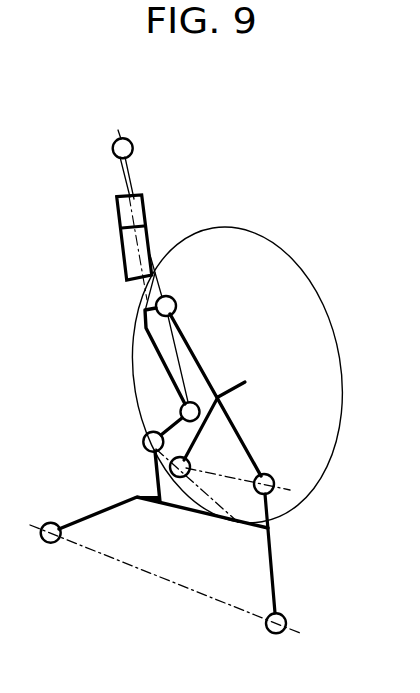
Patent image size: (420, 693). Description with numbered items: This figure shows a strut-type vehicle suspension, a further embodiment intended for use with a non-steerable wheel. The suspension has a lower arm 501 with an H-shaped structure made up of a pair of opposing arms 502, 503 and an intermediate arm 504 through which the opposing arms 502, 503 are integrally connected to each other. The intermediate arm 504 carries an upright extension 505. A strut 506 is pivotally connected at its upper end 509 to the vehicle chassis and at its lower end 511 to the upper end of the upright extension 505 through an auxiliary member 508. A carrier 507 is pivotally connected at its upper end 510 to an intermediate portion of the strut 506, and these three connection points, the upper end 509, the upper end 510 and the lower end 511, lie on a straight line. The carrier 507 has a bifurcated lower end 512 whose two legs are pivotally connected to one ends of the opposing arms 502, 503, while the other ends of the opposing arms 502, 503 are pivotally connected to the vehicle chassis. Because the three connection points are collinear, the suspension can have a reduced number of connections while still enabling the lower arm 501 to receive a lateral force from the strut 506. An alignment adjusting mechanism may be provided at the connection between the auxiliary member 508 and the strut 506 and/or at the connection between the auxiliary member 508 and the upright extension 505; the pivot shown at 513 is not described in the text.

The lower arm 501 is at (274, 555).
The opposing arm 502 is at (94, 512).
The opposing arm 503 is at (276, 602).
The intermediate arm 504 is at (222, 518).
The upright extension 505 is at (168, 467).
The strut 506 is at (224, 206).
The carrier 507 is at (197, 352).
The auxiliary member 508 is at (177, 416).
The upper end of strut 509 is at (129, 141).
The upper end of carrier 510 is at (175, 302).
The lower end of strut 511 is at (182, 405).
The bifurcated lower end 512 is at (235, 427).
The pivot 513 is at (143, 439).